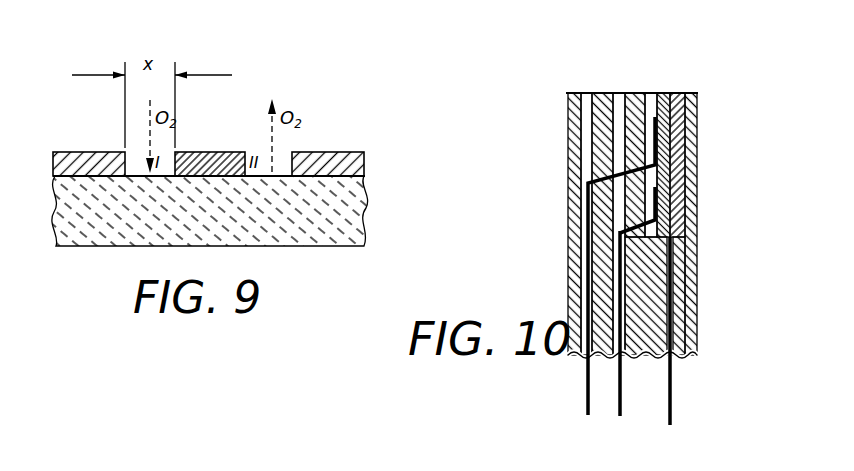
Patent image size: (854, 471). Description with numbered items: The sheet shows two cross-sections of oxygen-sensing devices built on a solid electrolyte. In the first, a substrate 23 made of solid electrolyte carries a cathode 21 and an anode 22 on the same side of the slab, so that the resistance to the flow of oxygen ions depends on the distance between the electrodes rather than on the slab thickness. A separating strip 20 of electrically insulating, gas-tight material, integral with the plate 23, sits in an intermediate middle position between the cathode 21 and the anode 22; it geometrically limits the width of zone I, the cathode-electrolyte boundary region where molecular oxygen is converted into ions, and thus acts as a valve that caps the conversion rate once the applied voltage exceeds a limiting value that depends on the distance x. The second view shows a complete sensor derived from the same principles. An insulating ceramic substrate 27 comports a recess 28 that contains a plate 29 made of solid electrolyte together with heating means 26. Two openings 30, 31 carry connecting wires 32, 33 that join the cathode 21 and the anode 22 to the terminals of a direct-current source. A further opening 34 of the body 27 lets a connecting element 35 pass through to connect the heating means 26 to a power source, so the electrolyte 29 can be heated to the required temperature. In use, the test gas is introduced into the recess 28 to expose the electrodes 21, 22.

In FIG. 9, the separating strip 20 is at (215, 162).
In FIG. 9, the cathode 21 is at (64, 162).
In FIG. 10, the cathode 21 is at (658, 200).
In FIG. 9, the anode 22 is at (340, 162).
In FIG. 10, the anode 22 is at (660, 140).
In FIG. 9, the substrate 23 is at (356, 205).
In FIG. 10, the heating means 26 is at (678, 172).
In FIG. 10, the insulating substrate 27 is at (690, 273).
In FIG. 10, the recess 28 is at (650, 102).
In FIG. 10, the plate 29 is at (697, 110).
In FIG. 10, the opening 30 is at (587, 102).
In FIG. 10, the opening 31 is at (619, 102).
In FIG. 10, the connecting wire 32 is at (585, 392).
In FIG. 10, the connecting wire 33 is at (622, 396).
In FIG. 10, the opening 34 is at (678, 310).
In FIG. 10, the connecting element 35 is at (673, 390).